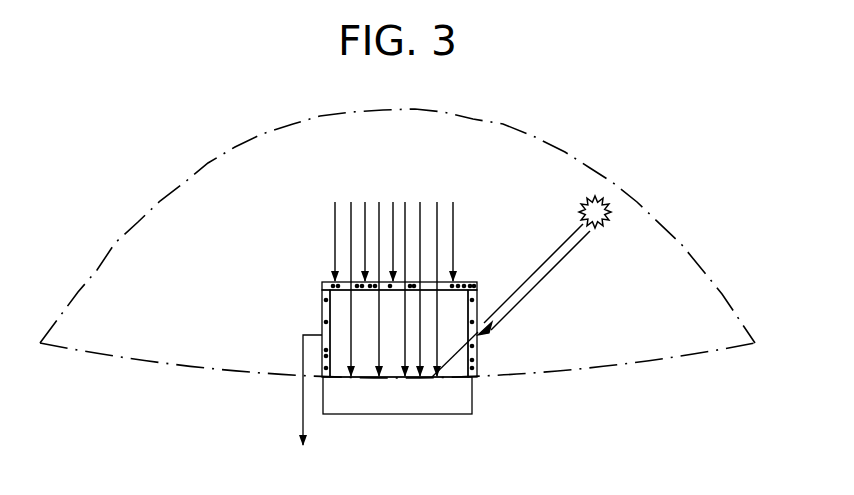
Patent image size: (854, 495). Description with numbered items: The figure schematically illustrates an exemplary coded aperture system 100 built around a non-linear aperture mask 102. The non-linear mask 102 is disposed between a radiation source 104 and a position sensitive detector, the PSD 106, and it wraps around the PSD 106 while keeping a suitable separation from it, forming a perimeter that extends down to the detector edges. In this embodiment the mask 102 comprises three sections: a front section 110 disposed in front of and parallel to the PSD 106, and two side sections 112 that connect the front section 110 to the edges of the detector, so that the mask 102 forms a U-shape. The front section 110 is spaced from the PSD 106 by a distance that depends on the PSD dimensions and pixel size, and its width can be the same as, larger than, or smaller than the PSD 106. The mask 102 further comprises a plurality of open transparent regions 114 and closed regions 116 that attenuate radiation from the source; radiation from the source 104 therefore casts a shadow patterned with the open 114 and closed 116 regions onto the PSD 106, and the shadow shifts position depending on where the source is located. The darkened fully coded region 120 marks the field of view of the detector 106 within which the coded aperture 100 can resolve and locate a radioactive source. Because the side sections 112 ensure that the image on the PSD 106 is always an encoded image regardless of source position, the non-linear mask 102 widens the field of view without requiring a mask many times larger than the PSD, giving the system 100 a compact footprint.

The coded aperture system 100 is at (162, 98).
The non-linear aperture mask 102 is at (313, 319).
The radiation source 104 is at (603, 182).
The PSD 106 is at (398, 414).
The front section 110 is at (322, 283).
The side sections 112 is at (436, 356).
The open transparent regions 114 is at (430, 283).
The closed regions 116 is at (477, 288).
The fully coded region 120 is at (83, 310).